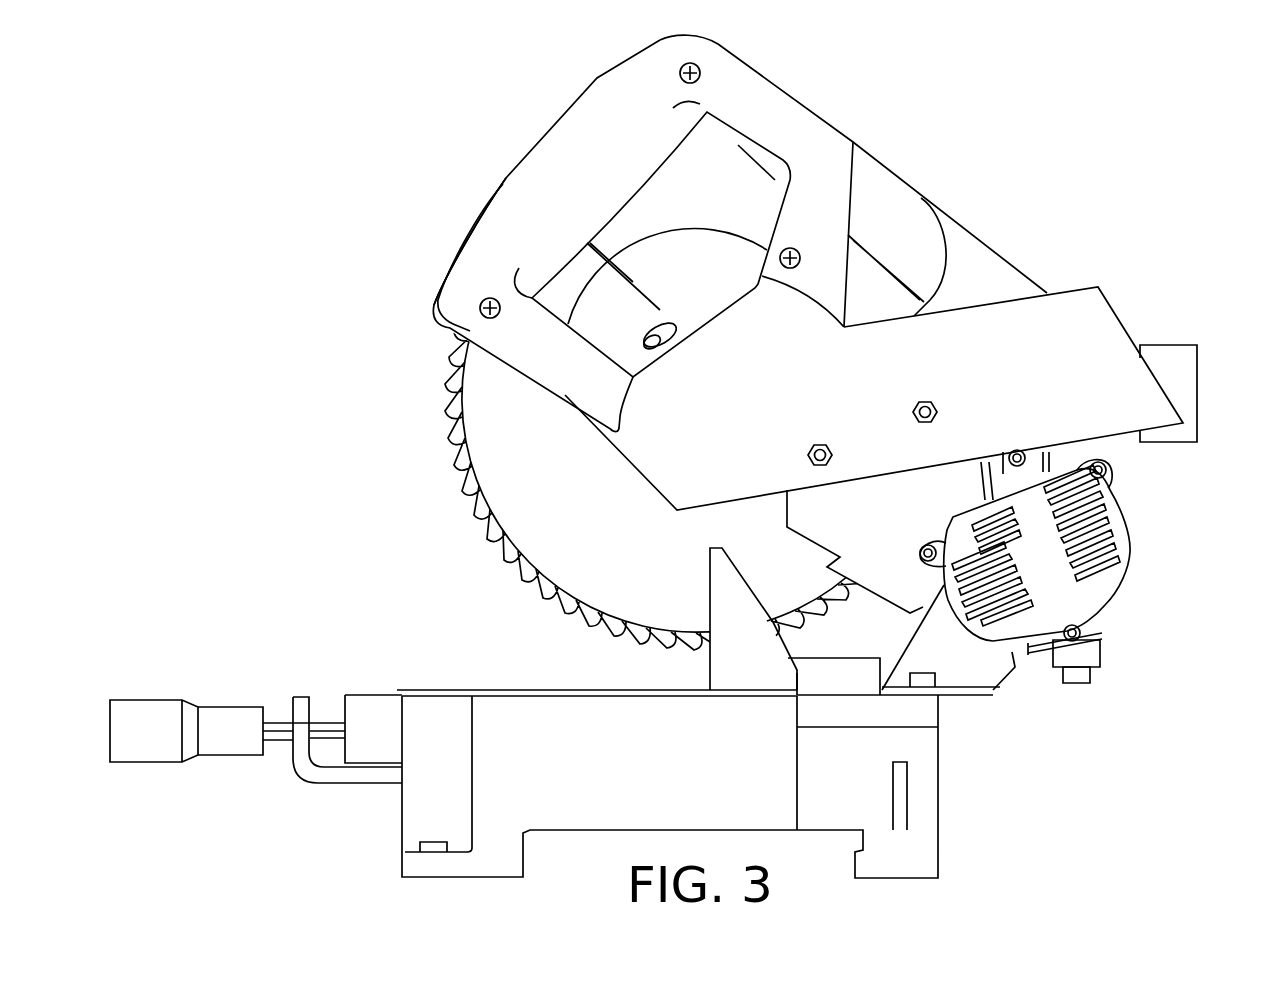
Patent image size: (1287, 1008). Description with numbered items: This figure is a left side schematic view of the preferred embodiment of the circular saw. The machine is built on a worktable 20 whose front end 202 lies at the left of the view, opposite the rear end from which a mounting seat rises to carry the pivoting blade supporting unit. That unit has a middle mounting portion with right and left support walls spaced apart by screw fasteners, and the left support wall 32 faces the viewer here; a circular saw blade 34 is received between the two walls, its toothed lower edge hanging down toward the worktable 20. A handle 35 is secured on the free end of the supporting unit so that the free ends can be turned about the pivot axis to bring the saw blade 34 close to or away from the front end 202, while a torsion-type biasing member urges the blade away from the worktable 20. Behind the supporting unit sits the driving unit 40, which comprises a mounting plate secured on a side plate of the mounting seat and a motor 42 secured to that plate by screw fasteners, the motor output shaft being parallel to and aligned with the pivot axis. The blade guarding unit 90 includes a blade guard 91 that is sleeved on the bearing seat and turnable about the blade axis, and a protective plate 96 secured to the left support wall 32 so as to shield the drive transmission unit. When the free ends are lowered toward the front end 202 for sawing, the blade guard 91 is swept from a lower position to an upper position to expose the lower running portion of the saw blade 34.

The worktable 20 is at (939, 797).
The front end of the worktable 202 is at (500, 690).
The left support wall 32 is at (973, 260).
The circular saw blade 34 is at (450, 423).
The handle 35 is at (617, 102).
The driving unit 40 is at (1084, 570).
The motor 42 is at (1128, 547).
The blade guarding unit 90 is at (460, 209).
The blade guard 91 is at (452, 258).
The protective plate 96 is at (1063, 323).